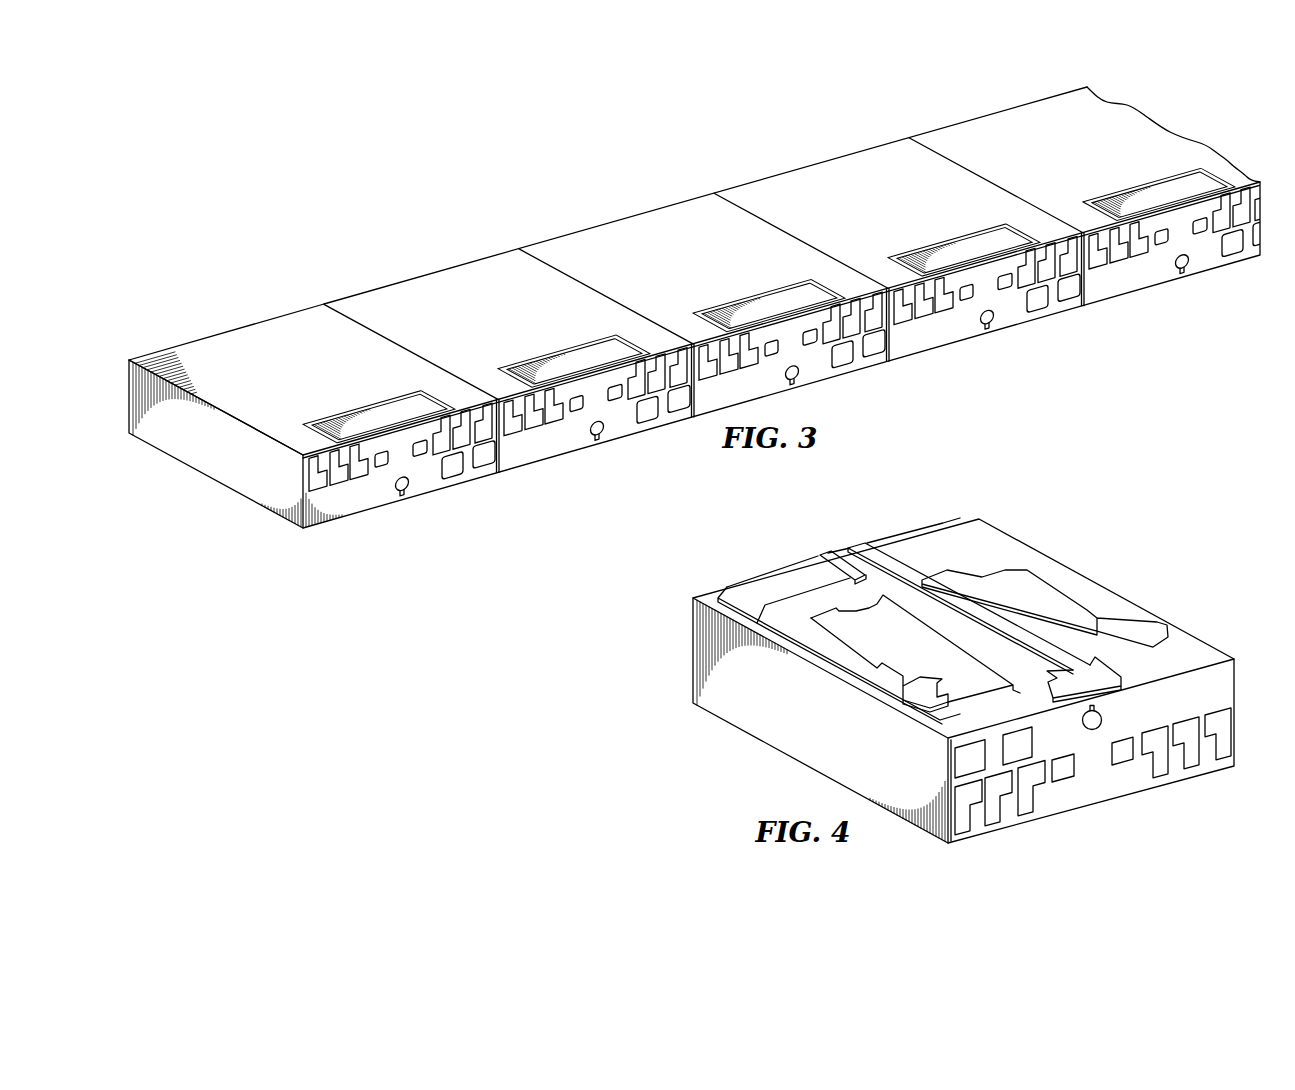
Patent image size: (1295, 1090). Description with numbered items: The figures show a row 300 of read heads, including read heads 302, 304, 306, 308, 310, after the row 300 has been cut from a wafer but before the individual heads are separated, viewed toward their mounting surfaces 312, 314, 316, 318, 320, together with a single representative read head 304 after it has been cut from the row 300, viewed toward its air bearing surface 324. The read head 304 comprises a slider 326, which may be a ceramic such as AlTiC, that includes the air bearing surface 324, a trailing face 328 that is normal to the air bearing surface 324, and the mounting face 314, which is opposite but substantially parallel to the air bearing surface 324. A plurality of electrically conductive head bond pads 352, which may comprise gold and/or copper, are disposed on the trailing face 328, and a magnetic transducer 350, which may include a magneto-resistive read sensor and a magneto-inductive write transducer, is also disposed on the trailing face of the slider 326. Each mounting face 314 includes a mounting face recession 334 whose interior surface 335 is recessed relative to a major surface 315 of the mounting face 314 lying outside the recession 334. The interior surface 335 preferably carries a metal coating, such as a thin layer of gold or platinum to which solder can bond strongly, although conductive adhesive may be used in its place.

In FIG. 3, the row 300 is at (296, 167).
In FIG. 3, the read head 302 is at (234, 336).
In FIG. 3, the read head 304 is at (543, 361).
In FIG. 4, the read head 304 is at (981, 679).
In FIG. 3, the read head 306 is at (615, 232).
In FIG. 3, the read head 308 is at (815, 175).
In FIG. 3, the read head 310 is at (996, 122).
In FIG. 3, the mounting surface 312 is at (305, 364).
In FIG. 3, the mounting face 314 is at (497, 300).
In FIG. 3, the major surface 315 is at (375, 298).
In FIG. 3, the mounting surface 316 is at (695, 250).
In FIG. 3, the mounting surface 318 is at (891, 198).
In FIG. 3, the mounting surface 320 is at (1075, 142).
In FIG. 4, the air bearing surface 324 is at (929, 566).
In FIG. 4, the slider 326 is at (754, 739).
In FIG. 3, the trailing face 328 is at (535, 452).
In FIG. 4, the trailing face 328 is at (1113, 786).
In FIG. 3, the mounting face recession 334 is at (568, 365).
In FIG. 3, the interior surface 335 is at (612, 352).
In FIG. 4, the magnetic transducer 350 is at (1102, 721).
In FIG. 4, the head bond pads 352 is at (962, 822).